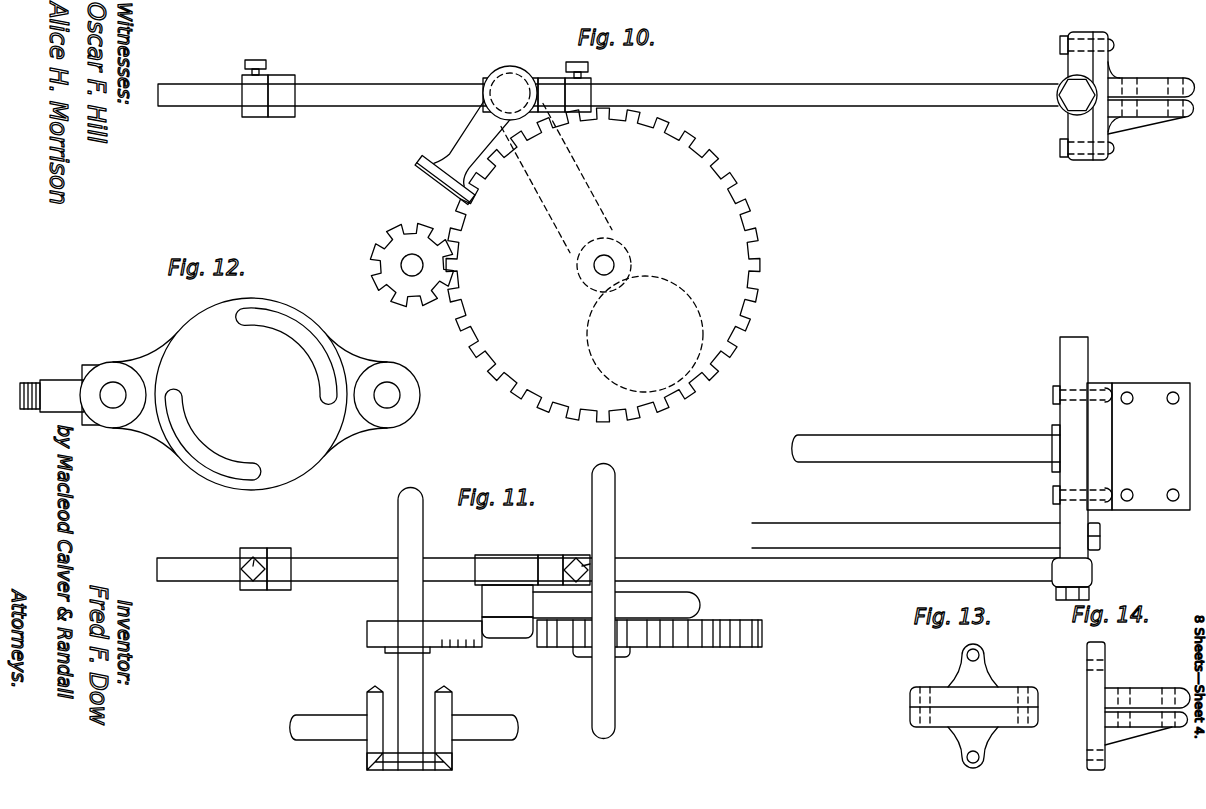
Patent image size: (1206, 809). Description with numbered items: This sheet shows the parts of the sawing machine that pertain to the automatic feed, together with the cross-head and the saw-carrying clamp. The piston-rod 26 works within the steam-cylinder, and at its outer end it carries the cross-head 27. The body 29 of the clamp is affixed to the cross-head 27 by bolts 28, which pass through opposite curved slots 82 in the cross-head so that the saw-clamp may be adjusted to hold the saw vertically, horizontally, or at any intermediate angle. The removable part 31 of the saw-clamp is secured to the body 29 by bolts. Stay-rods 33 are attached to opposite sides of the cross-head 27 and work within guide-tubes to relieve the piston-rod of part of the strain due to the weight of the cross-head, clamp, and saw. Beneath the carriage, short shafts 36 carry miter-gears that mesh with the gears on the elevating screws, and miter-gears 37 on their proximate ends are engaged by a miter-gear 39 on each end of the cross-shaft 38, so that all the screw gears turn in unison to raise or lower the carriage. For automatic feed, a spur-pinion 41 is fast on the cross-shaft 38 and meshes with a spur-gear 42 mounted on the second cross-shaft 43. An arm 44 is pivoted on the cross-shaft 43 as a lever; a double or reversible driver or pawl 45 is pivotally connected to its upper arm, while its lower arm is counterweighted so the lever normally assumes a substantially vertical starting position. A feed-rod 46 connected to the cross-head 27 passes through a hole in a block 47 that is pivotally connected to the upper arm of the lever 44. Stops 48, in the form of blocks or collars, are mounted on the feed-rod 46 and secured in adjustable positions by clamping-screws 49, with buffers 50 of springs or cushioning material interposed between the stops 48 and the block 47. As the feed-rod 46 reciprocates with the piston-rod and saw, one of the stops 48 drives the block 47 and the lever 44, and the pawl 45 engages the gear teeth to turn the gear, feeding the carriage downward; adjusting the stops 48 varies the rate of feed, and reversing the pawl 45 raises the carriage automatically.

In FIG. 11, the piston-rod 26 is at (862, 443).
In FIG. 10, the cross-head 27 is at (1080, 162).
In FIG. 12, the cross-head 27 is at (220, 394).
In FIG. 11, the cross-head 27 is at (1073, 338).
In FIG. 10, the bolts 28 is at (1060, 46).
In FIG. 11, the bolts 28 is at (1053, 396).
In FIG. 10, the body of the clamp 29 is at (1110, 68).
In FIG. 11, the body of the clamp 29 is at (1098, 430).
In FIG. 13, the body of the clamp 29 is at (1075, 670).
In FIG. 14, the body of the clamp 29 is at (1085, 670).
In FIG. 10, the removable part of the saw-clamp 31 is at (1156, 80).
In FIG. 11, the removable part of the saw-clamp 31 is at (1151, 446).
In FIG. 13, the removable part of the saw-clamp 31 is at (935, 692).
In FIG. 14, the removable part of the saw-clamp 31 is at (1145, 690).
In FIG. 11, the stay-rods 33 is at (820, 536).
In FIG. 11, the short shafts 36 is at (305, 722).
In FIG. 11, the miter-gears 37 is at (370, 696).
In FIG. 11, the cross-shaft 38 is at (408, 670).
In FIG. 11, the miter-gear 39 is at (400, 762).
In FIG. 10, the spur-pinion 41 is at (396, 248).
In FIG. 11, the spur-pinion 41 is at (443, 650).
In FIG. 10, the spur-gear 42 is at (603, 265).
In FIG. 11, the spur-gear 42 is at (678, 640).
In FIG. 10, the second cross-shaft 43 is at (607, 262).
In FIG. 11, the second cross-shaft 43 is at (610, 530).
In FIG. 10, the arm (lever) 44 is at (560, 178).
In FIG. 11, the arm (lever) 44 is at (696, 605).
In FIG. 10, the double or reversible driver or pawl 45 is at (468, 135).
In FIG. 11, the double or reversible driver or pawl 45 is at (452, 630).
In FIG. 10, the feed-rod 46 is at (838, 90).
In FIG. 11, the feed-rod 46 is at (194, 570).
In FIG. 10, the block 47 is at (486, 78).
In FIG. 11, the block 47 is at (506, 570).
In FIG. 10, the stops (blocks or collars) 48 is at (248, 82).
In FIG. 11, the stops (blocks or collars) 48 is at (246, 588).
In FIG. 10, the clamping-screws 49 is at (256, 60).
In FIG. 11, the clamping-screws 49 is at (254, 560).
In FIG. 10, the buffers 50 is at (284, 82).
In FIG. 11, the buffers 50 is at (282, 556).
In FIG. 12, the curved slots 82 is at (283, 320).